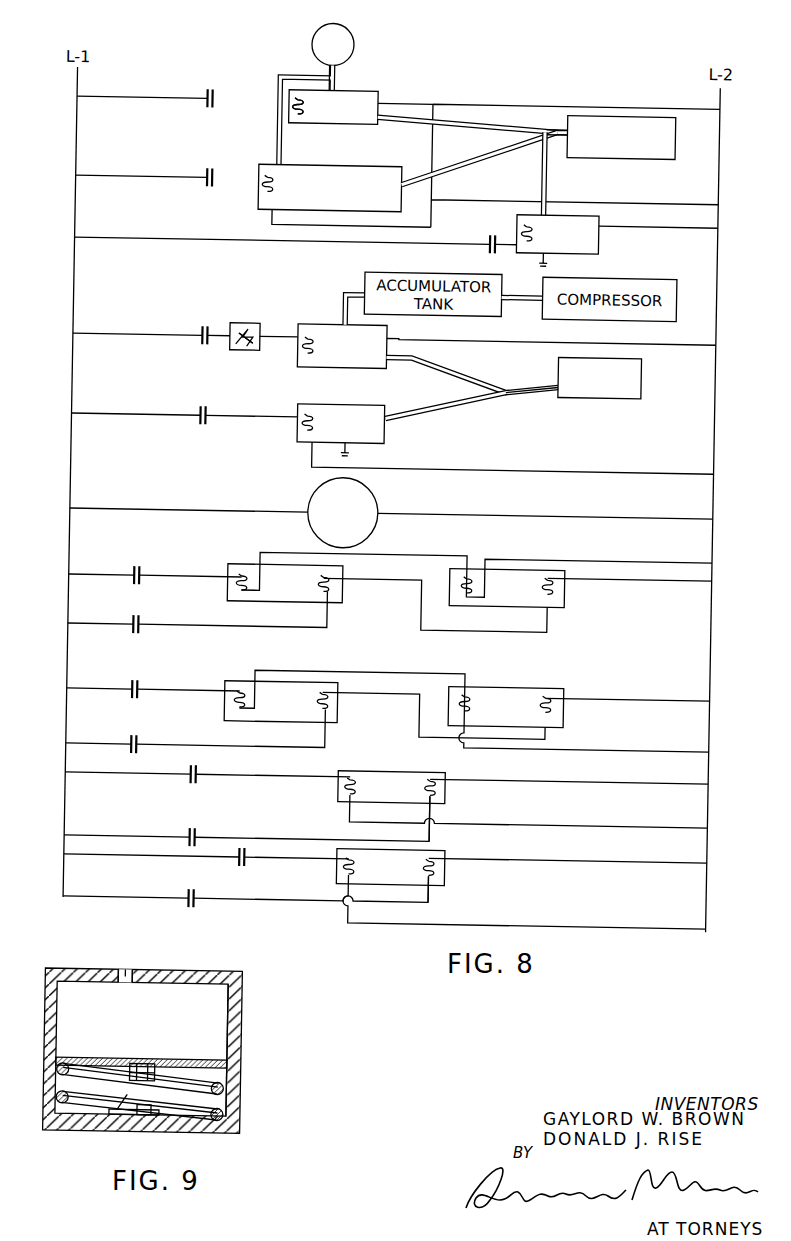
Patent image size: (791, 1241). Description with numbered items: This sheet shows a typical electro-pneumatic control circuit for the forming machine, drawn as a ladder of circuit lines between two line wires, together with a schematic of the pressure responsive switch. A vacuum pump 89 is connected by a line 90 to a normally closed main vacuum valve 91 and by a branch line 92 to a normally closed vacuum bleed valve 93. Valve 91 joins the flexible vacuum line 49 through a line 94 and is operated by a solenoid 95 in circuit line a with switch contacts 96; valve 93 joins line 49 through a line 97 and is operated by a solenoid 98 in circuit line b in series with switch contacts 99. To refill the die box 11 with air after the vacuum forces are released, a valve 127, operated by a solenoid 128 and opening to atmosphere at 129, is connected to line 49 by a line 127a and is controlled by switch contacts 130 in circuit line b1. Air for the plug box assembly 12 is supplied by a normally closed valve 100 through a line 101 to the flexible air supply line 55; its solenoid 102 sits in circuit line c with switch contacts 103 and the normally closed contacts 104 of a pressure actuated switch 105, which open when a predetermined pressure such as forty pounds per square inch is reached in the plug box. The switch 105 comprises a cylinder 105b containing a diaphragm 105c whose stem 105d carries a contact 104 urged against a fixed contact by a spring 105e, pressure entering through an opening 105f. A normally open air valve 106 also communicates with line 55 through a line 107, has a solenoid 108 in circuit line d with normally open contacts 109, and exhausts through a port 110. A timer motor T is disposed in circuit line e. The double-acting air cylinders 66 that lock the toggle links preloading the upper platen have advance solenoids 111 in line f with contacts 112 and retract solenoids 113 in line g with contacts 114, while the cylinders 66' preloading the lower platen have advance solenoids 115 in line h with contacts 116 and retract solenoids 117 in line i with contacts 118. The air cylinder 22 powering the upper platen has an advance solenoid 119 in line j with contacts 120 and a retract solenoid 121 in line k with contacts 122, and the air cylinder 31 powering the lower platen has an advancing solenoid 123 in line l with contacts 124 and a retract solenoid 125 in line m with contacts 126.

In FIG. 8, the vacuum pump 89 is at (336, 32).
In FIG. 8, the line 90 is at (328, 75).
In FIG. 8, the main vacuum valve 91 is at (369, 91).
In FIG. 8, the branch line 92 is at (282, 72).
In FIG. 8, the vacuum bleed valve 93 is at (390, 184).
In FIG. 8, the line 94 is at (440, 125).
In FIG. 8, the solenoid 95 is at (296, 120).
In FIG. 8, the switch contacts 96 is at (215, 92).
In FIG. 8, the line 97 is at (432, 171).
In FIG. 8, the solenoid 98 is at (260, 195).
In FIG. 8, the switch contacts 99 is at (206, 167).
In FIG. 8, the flexible vacuum line 49 is at (543, 124).
In FIG. 8, the die box 11 is at (664, 141).
In FIG. 8, the line 127a is at (539, 172).
In FIG. 8, the valve 127 is at (594, 214).
In FIG. 8, the solenoid 128 is at (526, 244).
In FIG. 8, the atmosphere opening 129 is at (540, 255).
In FIG. 8, the switch contacts 130 is at (484, 234).
In FIG. 8, the normally closed valve 100 is at (389, 334).
In FIG. 8, the line 101 is at (455, 374).
In FIG. 8, the solenoid 102 is at (307, 356).
In FIG. 8, the switch contacts 103 is at (206, 322).
In FIG. 8, the contacts 104 is at (248, 352).
In FIG. 9, the contacts 104 is at (128, 1114).
In FIG. 8, the pressure actuated switch 105 is at (254, 320).
In FIG. 9, the pressure actuated switch 105 is at (256, 984).
In FIG. 8, the normally open air valve 106 is at (377, 400).
In FIG. 8, the line 107 is at (416, 404).
In FIG. 8, the solenoid 108 is at (298, 436).
In FIG. 8, the contacts 109 is at (204, 403).
In FIG. 8, the port 110 is at (354, 450).
In FIG. 8, the plug box assembly 12 is at (639, 363).
In FIG. 8, the flexible air supply line 55 is at (534, 389).
In FIG. 8, the timer motor T is at (380, 495).
In FIG. 8, the advance solenoids 111 is at (252, 590).
In FIG. 8, the retract solenoids 113 is at (332, 593).
In FIG. 8, the double-acting air cylinders 66 is at (415, 598).
In FIG. 8, the double-acting air cylinders 66' is at (398, 685).
In FIG. 8, the advance solenoids 115 is at (250, 712).
In FIG. 8, the retract solenoids 117 is at (340, 710).
In FIG. 8, the switch contacts 112 is at (151, 570).
In FIG. 8, the switch contacts 114 is at (151, 622).
In FIG. 8, the switch contacts 116 is at (152, 686).
In FIG. 8, the switch contacts 118 is at (146, 743).
In FIG. 8, the advance solenoid 119 is at (354, 786).
In FIG. 8, the switch contacts 120 is at (208, 774).
In FIG. 8, the retract solenoid 121 is at (442, 786).
In FIG. 8, the double-acting air cylinder 22 is at (405, 778).
In FIG. 8, the switch contacts 122 is at (206, 834).
In FIG. 8, the advancing solenoid 123 is at (350, 867).
In FIG. 8, the switch contacts 124 is at (244, 863).
In FIG. 8, the retract solenoid 125 is at (442, 865).
In FIG. 8, the double-acting air cylinder 31 is at (437, 854).
In FIG. 8, the switch contacts 126 is at (203, 900).
In FIG. 9, the opening 105f is at (125, 975).
In FIG. 9, the cylinder 105b is at (239, 1029).
In FIG. 9, the diaphragm 105c is at (225, 1060).
In FIG. 9, the stem 105d is at (150, 1062).
In FIG. 9, the spring 105e is at (223, 1085).
In FIG. 8, the circuit line a is at (114, 94).
In FIG. 8, the circuit line b is at (112, 173).
In FIG. 8, the circuit line b1 is at (110, 235).
In FIG. 8, the circuit line c is at (122, 333).
In FIG. 8, the circuit line d is at (113, 412).
In FIG. 8, the circuit line e is at (113, 506).
In FIG. 8, the series line f is at (86, 573).
In FIG. 8, the circuit line g is at (84, 621).
In FIG. 8, the circuit line h is at (95, 687).
In FIG. 8, the circuit line i is at (91, 742).
In FIG. 8, the circuit line j is at (88, 771).
In FIG. 8, the circuit line k is at (93, 834).
In FIG. 8, the circuit line l is at (89, 854).
In FIG. 8, the circuit line m is at (94, 896).